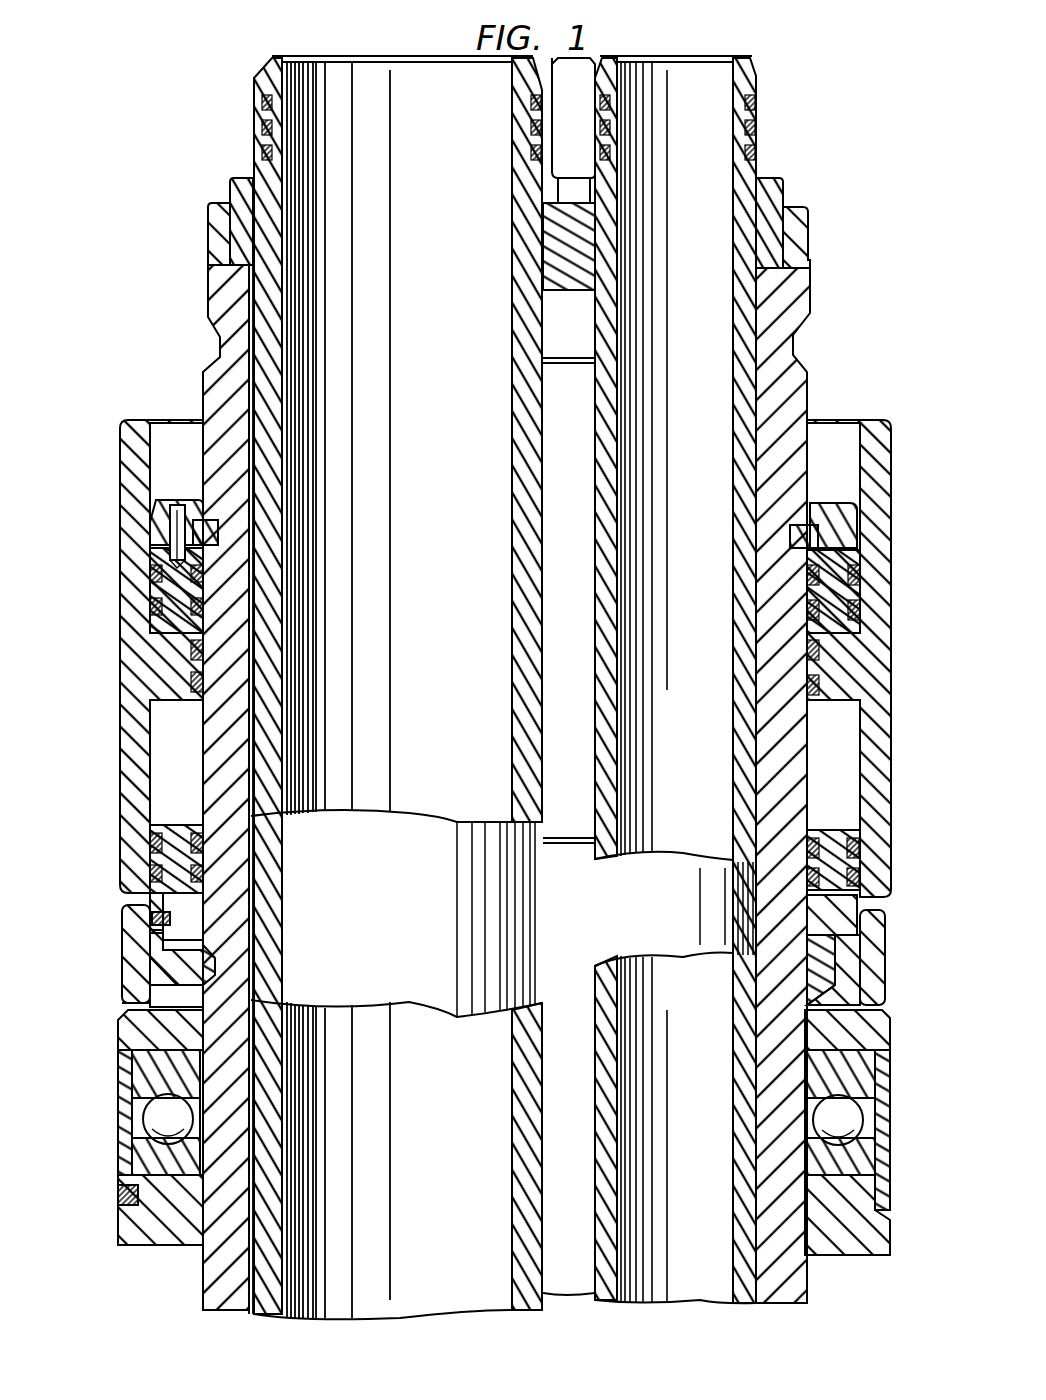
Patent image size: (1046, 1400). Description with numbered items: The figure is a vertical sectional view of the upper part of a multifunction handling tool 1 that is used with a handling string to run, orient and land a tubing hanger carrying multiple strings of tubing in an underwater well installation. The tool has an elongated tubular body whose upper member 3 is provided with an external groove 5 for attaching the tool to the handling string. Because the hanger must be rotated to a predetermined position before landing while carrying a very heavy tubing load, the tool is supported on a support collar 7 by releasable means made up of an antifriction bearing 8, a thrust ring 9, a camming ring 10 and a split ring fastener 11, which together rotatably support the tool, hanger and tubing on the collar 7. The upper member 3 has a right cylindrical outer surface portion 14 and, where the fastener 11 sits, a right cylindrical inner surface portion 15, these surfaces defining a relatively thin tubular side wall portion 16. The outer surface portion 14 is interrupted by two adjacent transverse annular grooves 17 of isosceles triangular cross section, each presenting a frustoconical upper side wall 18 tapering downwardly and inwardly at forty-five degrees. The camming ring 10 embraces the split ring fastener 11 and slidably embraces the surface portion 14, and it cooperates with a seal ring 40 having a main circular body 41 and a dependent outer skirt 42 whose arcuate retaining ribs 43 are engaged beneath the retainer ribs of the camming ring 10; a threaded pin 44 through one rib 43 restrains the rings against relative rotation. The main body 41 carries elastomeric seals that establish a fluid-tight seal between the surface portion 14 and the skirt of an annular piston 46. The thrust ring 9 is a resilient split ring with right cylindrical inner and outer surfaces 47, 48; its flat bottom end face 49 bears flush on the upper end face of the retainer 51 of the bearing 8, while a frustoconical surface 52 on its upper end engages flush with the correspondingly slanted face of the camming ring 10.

The multifunction handling tool 1 is at (817, 209).
The upper member 3 is at (207, 226).
The external groove 5 is at (218, 345).
The support collar 7 is at (890, 1235).
The antifriction bearing 8 is at (890, 1037).
The thrust ring 9 is at (121, 995).
The camming ring 10 is at (210, 976).
The split ring fastener 11 is at (800, 925).
The right cylindrical outer surface portion 14 is at (203, 386).
The right cylindrical inner surface portion 15 is at (251, 1058).
The tubular side wall portion 16 is at (272, 1095).
The transverse annular outwardly opening grooves 17 is at (200, 920).
The frustoconical upper side wall 18 is at (770, 960).
The seal ring 40 is at (174, 825).
The main circular body 41 is at (195, 862).
The dependent outer skirt 42 is at (155, 900).
The arcuate retaining ribs 43 is at (158, 945).
The threaded pin 44 is at (152, 935).
The annular piston 46 is at (892, 617).
The inner surface 47 is at (210, 1000).
The outer surface 48 is at (122, 985).
The flat transverse annular bottom end face 49 is at (130, 1025).
The retainer 51 is at (118, 1133).
The frustoconical surface 52 is at (862, 900).